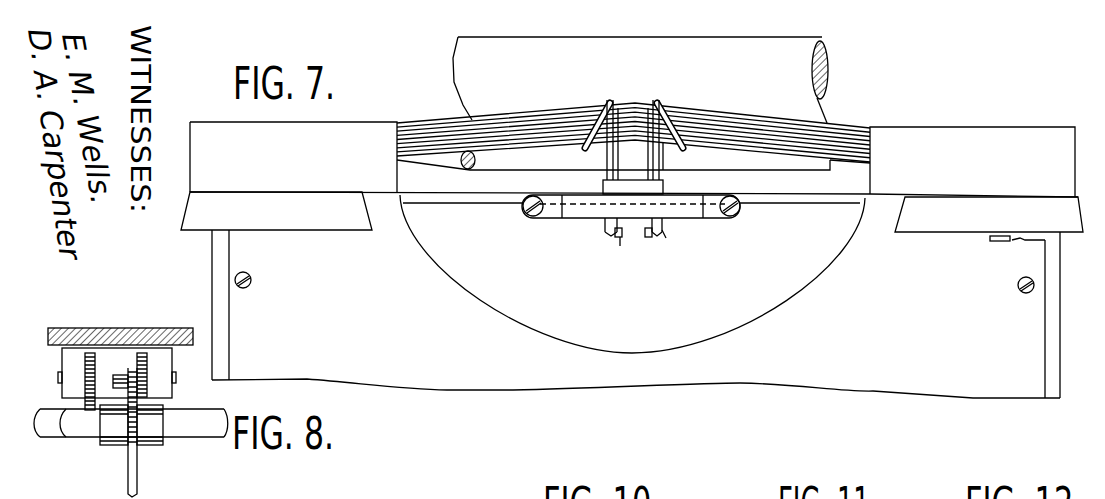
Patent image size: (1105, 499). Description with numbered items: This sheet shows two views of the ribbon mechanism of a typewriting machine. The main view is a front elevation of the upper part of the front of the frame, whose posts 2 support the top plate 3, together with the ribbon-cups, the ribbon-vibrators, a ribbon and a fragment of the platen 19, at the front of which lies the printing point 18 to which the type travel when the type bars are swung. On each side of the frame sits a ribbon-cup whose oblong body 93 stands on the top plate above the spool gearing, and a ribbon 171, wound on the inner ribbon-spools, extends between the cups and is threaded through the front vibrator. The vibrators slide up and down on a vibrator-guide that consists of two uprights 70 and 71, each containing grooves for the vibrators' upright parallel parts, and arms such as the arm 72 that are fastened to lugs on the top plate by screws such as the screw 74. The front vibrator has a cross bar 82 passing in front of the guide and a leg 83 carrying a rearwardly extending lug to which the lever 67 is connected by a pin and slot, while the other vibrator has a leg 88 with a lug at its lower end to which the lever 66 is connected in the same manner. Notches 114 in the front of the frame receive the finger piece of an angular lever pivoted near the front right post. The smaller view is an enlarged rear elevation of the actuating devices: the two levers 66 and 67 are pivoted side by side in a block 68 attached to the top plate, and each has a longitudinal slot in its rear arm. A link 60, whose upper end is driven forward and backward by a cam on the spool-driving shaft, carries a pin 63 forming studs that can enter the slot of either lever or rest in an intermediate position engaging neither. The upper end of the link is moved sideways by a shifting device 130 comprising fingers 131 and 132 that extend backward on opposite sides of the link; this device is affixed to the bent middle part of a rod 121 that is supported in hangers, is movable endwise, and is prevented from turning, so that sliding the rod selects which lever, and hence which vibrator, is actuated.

In FIG. 7, the posts 2 is at (214, 264).
In FIG. 7, the top plate 3 is at (304, 227).
In FIG. 7, the printing point 18 is at (638, 108).
In FIG. 7, the platen 19 is at (815, 93).
In FIG. 8, the link 60 is at (135, 479).
In FIG. 8, the pin 63 is at (112, 383).
In FIG. 7, the lever 66 is at (620, 247).
In FIG. 8, the lever 66 is at (146, 372).
In FIG. 7, the lever 67 is at (652, 238).
In FIG. 8, the lever 67 is at (98, 360).
In FIG. 8, the block 68 is at (65, 366).
In FIG. 7, the upright 70 is at (612, 155).
In FIG. 7, the upright 71 is at (655, 159).
In FIG. 7, the arm 72 is at (581, 216).
In FIG. 7, the screw 74 is at (536, 216).
In FIG. 7, the cross bar 82 is at (632, 186).
In FIG. 7, the leg 83 is at (661, 231).
In FIG. 7, the leg 88 is at (612, 234).
In FIG. 7, the oblong body 93 is at (352, 129).
In FIG. 7, the notches 114 is at (1027, 238).
In FIG. 8, the rod 121 is at (199, 436).
In FIG. 8, the shifting device 130 is at (154, 434).
In FIG. 8, the finger 131 is at (178, 406).
In FIG. 8, the finger 132 is at (114, 440).
In FIG. 7, the ribbon 171 is at (843, 131).